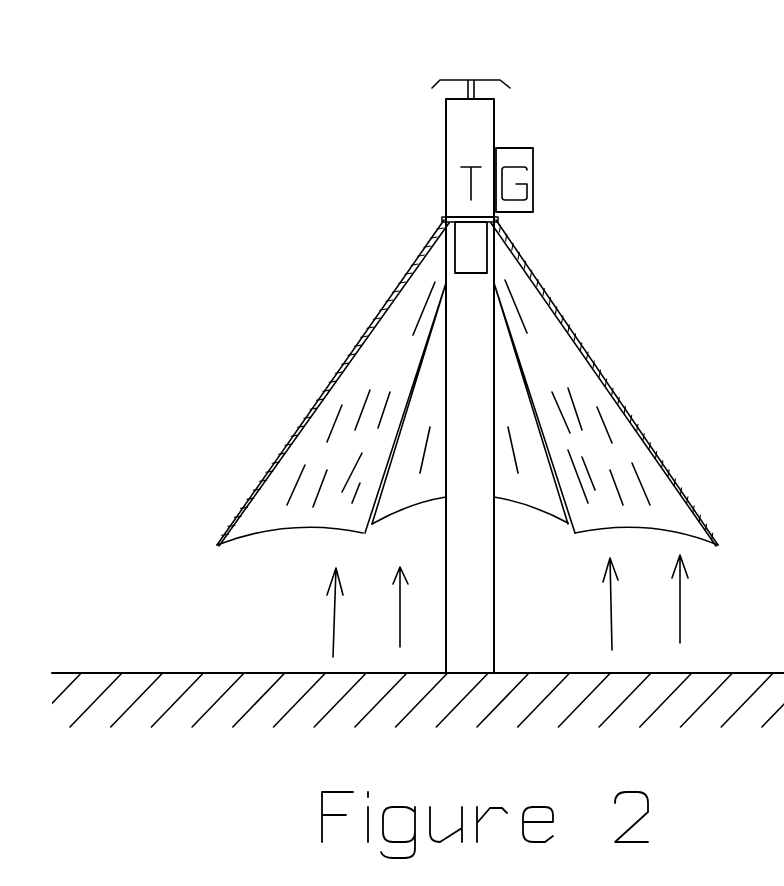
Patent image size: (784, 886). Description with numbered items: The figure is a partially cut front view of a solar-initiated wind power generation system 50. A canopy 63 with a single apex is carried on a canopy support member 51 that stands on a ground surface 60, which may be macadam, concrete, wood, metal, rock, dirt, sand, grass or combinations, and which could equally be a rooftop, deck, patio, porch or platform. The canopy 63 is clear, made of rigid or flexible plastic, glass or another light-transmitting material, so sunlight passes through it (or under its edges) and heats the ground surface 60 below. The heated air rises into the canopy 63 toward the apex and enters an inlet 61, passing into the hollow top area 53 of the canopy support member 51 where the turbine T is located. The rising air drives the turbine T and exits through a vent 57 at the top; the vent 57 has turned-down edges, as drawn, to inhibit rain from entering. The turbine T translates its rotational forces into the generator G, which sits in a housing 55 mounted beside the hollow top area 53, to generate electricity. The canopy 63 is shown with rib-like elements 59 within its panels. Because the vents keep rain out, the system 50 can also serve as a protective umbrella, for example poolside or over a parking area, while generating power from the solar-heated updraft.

The solar-initiated wind power generation system 50 is at (457, 383).
The canopy support member 51 is at (468, 613).
The hollow top area 53 is at (447, 163).
The housing 55 is at (535, 158).
The vent 57 is at (487, 78).
The wing rib frame 59 is at (470, 302).
The ground surface 60 is at (302, 673).
The inlet 61 is at (457, 235).
The canopy 63 is at (323, 383).